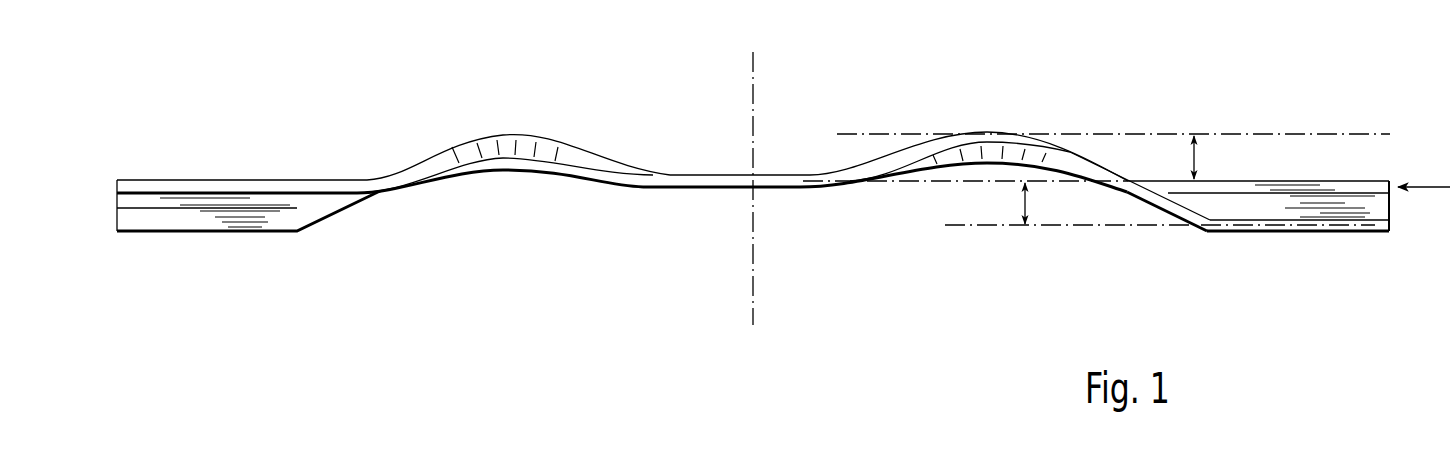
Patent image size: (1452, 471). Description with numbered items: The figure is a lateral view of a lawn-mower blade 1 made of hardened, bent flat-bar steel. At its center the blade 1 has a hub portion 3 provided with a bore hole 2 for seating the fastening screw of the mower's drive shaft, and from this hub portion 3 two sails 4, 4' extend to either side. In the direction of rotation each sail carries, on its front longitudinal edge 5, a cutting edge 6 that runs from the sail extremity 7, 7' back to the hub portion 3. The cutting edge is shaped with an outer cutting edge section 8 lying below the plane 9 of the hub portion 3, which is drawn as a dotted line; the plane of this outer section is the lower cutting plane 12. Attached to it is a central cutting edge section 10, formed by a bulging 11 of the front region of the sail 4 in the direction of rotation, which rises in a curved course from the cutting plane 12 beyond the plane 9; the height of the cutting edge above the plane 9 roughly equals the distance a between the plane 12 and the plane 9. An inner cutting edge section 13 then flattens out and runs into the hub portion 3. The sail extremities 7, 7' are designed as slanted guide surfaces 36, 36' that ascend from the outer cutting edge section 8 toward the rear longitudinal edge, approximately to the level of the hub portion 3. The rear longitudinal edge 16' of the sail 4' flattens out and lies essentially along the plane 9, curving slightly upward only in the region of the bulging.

The blade 1 is at (641, 138).
The bore hole 2 is at (748, 187).
The hub portion 3 is at (711, 178).
The sail 4 is at (982, 115).
The sail 4' is at (512, 116).
The front longitudinal edge 5 is at (1167, 217).
The cutting edge 6 is at (1128, 193).
The sail extremity 7 is at (1412, 246).
The sail extremity 7' is at (119, 246).
The outer cutting edge section 8 is at (1255, 230).
The plane of the hub portion 9 is at (898, 183).
The central cutting edge section 10 is at (1045, 138).
The bulging 11 is at (972, 132).
The cutting plane 12 is at (1350, 230).
The inner cutting edge section 13 is at (863, 172).
The rear longitudinal edge 16' is at (500, 217).
The slanted guide surface 36 is at (1258, 133).
The slanted guide surface 36' is at (248, 262).